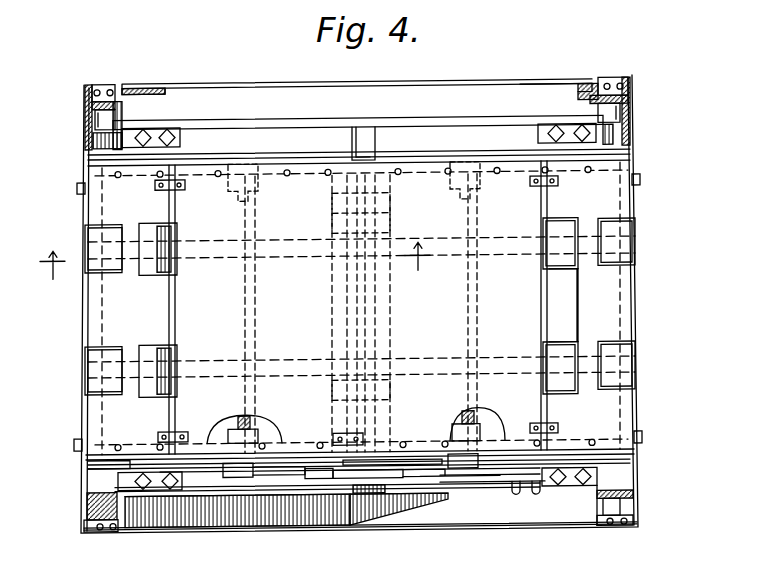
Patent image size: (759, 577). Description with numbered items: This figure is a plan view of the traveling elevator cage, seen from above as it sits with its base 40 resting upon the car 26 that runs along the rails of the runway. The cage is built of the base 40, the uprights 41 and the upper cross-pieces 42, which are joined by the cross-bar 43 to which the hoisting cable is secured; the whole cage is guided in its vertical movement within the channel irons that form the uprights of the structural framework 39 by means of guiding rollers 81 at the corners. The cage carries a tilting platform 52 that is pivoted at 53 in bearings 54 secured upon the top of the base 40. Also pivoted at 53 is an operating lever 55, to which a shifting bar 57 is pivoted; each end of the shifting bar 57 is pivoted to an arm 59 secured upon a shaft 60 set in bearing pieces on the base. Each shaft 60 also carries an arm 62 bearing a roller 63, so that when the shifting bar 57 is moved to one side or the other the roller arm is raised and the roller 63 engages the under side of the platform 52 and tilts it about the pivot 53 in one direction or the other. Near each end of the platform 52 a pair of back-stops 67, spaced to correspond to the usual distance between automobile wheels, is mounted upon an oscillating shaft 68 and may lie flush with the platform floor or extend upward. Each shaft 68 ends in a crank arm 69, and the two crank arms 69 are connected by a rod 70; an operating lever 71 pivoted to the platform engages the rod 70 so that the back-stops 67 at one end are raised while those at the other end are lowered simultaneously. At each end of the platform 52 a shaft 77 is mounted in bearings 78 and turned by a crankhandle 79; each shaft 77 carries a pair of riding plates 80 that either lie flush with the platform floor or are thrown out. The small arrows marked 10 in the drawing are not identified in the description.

The direction arrow 10 is at (231, 261).
The car 26 is at (466, 525).
The structural framework 39 is at (520, 81).
The base 40 is at (510, 486).
The uprights 41 is at (632, 137).
The upper cross-pieces 42 is at (400, 120).
The cross-bar 43 is at (380, 147).
The tilting platform 52 is at (596, 302).
The pivot 53 is at (378, 310).
The bearings 54 is at (388, 222).
The operating lever 55 is at (300, 480).
The shifting bar 57 is at (420, 480).
The arm 59 is at (240, 478).
The shaft 60 is at (256, 335).
The arm 62 is at (240, 185).
The roller 63 is at (228, 442).
The back-stops 67 is at (160, 240).
The oscillating shaft 68 is at (176, 310).
The crank arm 69 is at (165, 455).
The rod 70 is at (282, 460).
The operating lever 71 is at (385, 458).
The shaft 77 is at (84, 318).
The bearings 78 is at (77, 186).
The crankhandle 79 is at (95, 464).
The riding plates 80 is at (92, 236).
The guiding rollers 81 is at (92, 112).